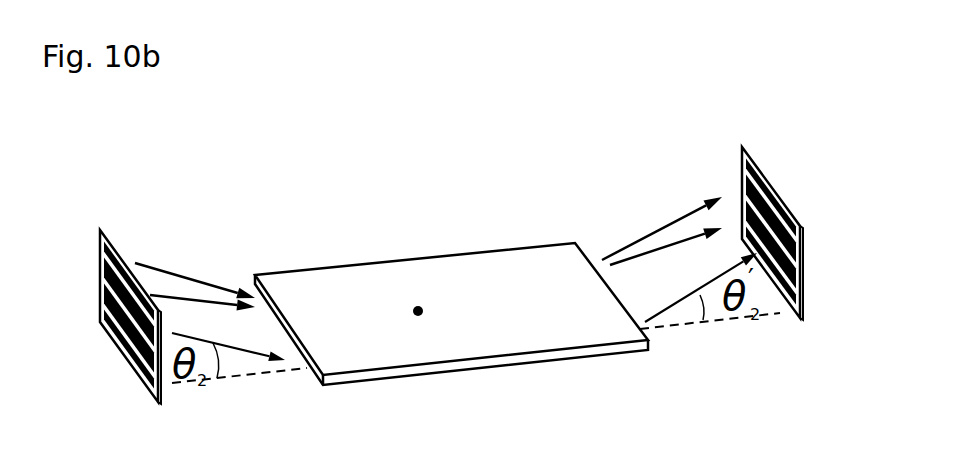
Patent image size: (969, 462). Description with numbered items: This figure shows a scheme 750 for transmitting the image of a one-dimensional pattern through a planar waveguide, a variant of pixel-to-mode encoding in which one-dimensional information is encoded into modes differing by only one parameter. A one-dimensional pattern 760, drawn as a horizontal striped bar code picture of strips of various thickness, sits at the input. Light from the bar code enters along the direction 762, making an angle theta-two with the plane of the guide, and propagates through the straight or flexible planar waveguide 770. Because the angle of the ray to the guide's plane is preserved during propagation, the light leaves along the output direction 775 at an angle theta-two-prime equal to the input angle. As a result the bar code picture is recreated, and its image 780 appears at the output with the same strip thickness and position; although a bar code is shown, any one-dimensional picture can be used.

The optical system with plate 750 is at (362, 152).
The one-dimensional pattern 760 is at (120, 350).
The angle θ2 ray 762 is at (177, 270).
The planar waveguide 770 is at (413, 318).
The angle θ2' ray 775 is at (663, 223).
The image 780 is at (777, 230).